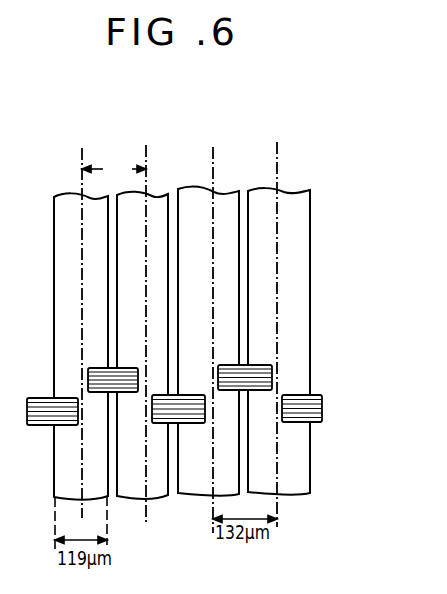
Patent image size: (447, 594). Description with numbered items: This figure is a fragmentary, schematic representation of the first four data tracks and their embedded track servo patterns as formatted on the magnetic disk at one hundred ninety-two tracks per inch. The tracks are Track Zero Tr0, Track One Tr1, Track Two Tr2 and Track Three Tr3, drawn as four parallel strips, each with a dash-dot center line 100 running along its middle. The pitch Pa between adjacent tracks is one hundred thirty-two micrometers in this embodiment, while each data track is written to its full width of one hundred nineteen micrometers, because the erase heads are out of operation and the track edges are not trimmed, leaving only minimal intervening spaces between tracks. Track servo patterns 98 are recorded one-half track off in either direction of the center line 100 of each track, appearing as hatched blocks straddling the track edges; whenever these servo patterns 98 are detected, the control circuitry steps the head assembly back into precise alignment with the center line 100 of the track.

The center line 100 is at (277, 184).
The track servo patterns 98 is at (272, 374).
The Track Zero Tr0 is at (88, 318).
The Track One Tr1 is at (145, 317).
The Track Two Tr2 is at (222, 323).
The Track Three Tr3 is at (281, 319).
The pitch Pa is at (114, 170).